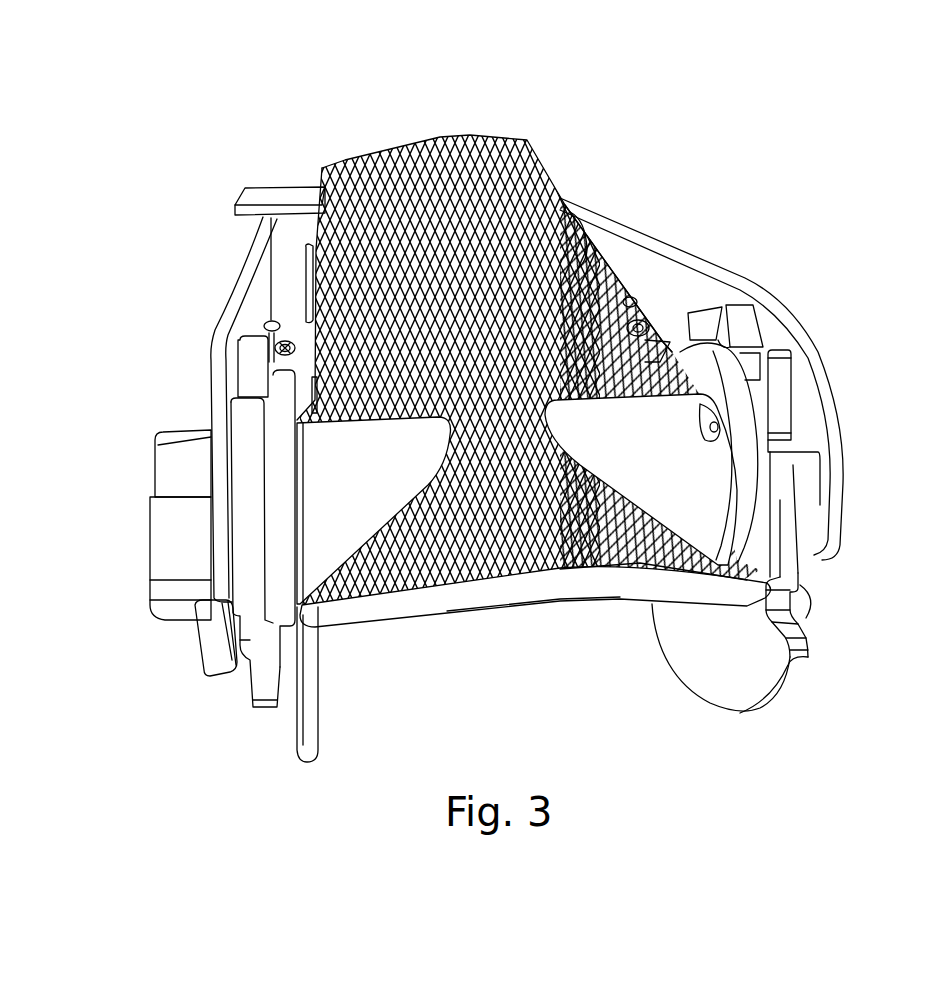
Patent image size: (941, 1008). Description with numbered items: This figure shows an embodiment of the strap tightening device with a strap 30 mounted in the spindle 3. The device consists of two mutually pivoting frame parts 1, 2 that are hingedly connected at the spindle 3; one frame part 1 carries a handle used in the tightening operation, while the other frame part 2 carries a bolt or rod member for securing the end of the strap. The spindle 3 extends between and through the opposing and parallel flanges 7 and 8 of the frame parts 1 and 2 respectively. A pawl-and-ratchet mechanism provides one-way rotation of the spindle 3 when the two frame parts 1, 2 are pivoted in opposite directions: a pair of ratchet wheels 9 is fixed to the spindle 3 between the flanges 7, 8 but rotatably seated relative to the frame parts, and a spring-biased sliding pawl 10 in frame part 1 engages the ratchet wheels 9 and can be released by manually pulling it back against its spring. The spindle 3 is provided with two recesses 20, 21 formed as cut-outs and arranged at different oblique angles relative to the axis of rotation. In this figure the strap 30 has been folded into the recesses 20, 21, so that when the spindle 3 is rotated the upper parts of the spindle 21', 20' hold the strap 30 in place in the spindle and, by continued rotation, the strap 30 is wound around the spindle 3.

The frame part 1 is at (720, 273).
The frame part 2 is at (742, 692).
The spindle 3 is at (670, 410).
The flange 7 is at (833, 456).
The flange 8 is at (796, 538).
The ratchet wheels 9 is at (742, 312).
The pawl 10 is at (615, 288).
The recess 20 is at (535, 603).
The recess 21 is at (653, 589).
The upper part of the spindle 20' is at (374, 510).
The upper part of the spindle 21' is at (641, 479).
The strap 30 is at (498, 130).